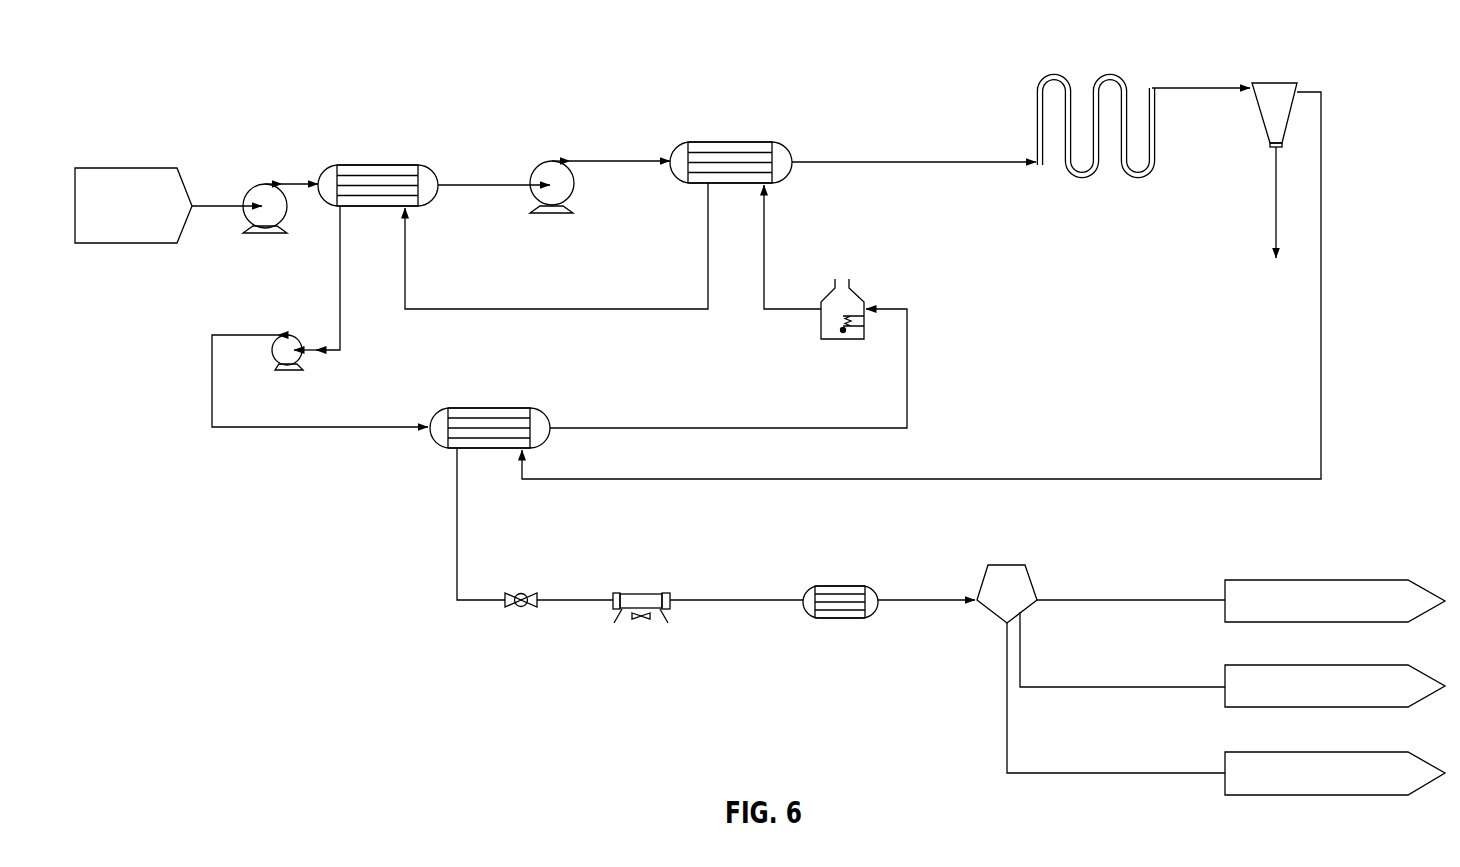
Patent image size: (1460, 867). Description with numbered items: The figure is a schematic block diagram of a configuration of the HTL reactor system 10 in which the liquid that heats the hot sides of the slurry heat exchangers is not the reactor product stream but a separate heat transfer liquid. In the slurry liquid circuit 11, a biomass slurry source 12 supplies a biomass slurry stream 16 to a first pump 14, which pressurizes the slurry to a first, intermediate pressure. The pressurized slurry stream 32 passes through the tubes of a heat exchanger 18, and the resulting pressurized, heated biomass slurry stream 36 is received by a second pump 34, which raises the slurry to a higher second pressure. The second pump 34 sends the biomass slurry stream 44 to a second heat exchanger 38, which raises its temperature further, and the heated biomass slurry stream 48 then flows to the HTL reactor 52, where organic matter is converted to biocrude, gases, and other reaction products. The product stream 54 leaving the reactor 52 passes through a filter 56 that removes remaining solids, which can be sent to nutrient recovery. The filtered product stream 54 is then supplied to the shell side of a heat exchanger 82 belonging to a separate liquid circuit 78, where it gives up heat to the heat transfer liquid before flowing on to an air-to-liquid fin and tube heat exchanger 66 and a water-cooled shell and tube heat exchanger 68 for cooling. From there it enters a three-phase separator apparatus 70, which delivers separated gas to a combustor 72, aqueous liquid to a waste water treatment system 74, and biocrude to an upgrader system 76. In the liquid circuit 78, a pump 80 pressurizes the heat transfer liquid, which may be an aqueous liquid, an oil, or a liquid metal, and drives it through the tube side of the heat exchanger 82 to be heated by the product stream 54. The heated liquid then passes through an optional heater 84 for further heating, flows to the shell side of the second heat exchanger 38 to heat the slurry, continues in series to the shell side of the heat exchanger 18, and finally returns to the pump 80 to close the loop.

The HTL reactor system 10 is at (458, 33).
The liquid circuit 11 is at (632, 100).
The biomass slurry source 12 is at (127, 168).
The first pump 14 is at (268, 183).
The biomass slurry stream 16 is at (230, 205).
The heat exchanger 18 is at (332, 164).
The biomass slurry stream 32 is at (293, 180).
The second pump 34 is at (543, 163).
The pressurized, heated biomass slurry stream 36 is at (495, 183).
The second heat exchanger 38 is at (685, 142).
The biomass slurry stream 44 is at (623, 160).
The biomass slurry stream 48 is at (912, 160).
The HTL reactor 52 is at (1053, 72).
The product stream 54 is at (1203, 85).
The filter 56 is at (1273, 82).
The air-to-liquid heat exchanger 66 is at (643, 592).
The water-cooled shell and tube heat exchanger 68 is at (840, 586).
The three-phase separator apparatus 70 is at (980, 582).
The combustor 72 is at (1275, 579).
The waste water treatment system 74 is at (1275, 664).
The upgrader system 76 is at (1275, 751).
The liquid circuit 78 is at (697, 410).
The pump 80 is at (297, 338).
The heat exchanger 82 is at (521, 405).
The heater 84 is at (852, 295).